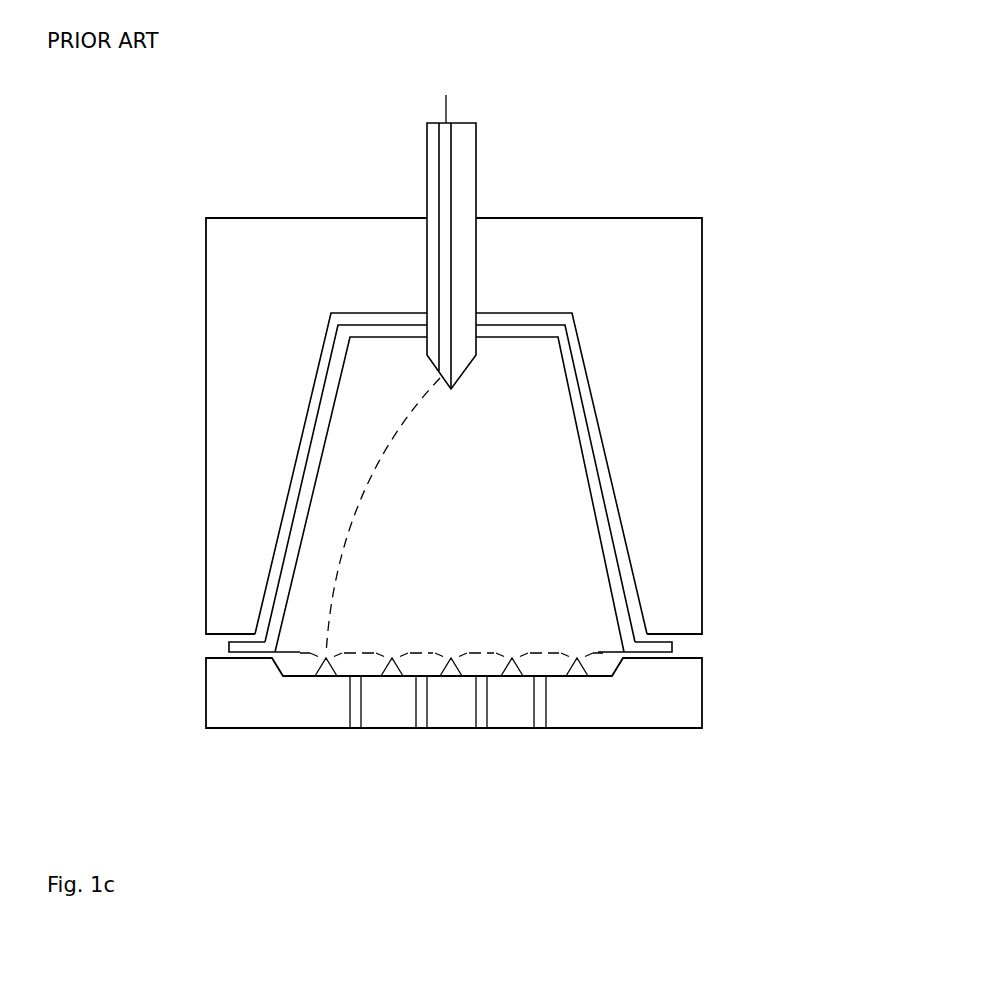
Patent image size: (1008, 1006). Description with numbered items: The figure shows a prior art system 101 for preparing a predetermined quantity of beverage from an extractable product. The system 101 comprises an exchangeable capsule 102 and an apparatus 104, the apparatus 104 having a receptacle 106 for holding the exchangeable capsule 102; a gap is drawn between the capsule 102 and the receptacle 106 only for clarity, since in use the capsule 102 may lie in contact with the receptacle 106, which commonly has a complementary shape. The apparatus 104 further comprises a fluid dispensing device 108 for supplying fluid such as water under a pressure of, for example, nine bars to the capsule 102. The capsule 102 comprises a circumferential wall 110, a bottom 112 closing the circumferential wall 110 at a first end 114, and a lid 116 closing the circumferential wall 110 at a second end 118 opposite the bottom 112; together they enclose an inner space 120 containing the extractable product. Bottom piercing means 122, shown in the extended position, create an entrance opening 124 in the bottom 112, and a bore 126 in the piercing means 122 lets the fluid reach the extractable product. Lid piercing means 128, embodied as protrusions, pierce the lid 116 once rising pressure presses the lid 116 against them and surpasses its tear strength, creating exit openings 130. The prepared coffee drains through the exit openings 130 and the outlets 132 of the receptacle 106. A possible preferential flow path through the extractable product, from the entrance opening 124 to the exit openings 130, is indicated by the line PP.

The system 101 is at (734, 765).
The exchangeable capsule 102 is at (610, 520).
The apparatus 104 is at (735, 239).
The receptacle 106 is at (702, 372).
The fluid dispensing device 108 is at (476, 141).
The circumferential wall 110 is at (617, 585).
The bottom 112 is at (510, 331).
The first end 114 is at (561, 336).
The lid 116 is at (605, 653).
The second end 118 is at (627, 634).
The inner space 120 is at (408, 384).
The bottom piercing means 122 is at (476, 181).
The entrance opening 124 is at (483, 348).
The bore 126 is at (448, 96).
The lid piercing means 128 is at (487, 768).
The exit openings 130 is at (321, 648).
The outlets 132 is at (540, 827).
The preferential path PP is at (362, 495).